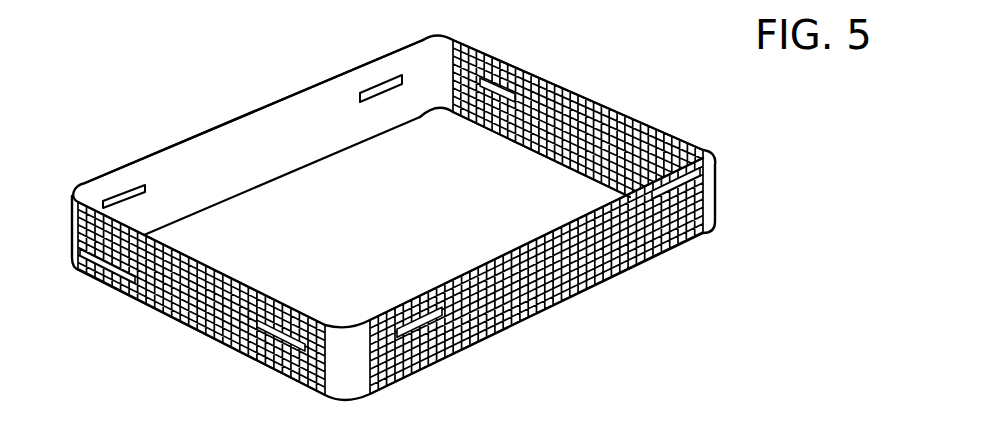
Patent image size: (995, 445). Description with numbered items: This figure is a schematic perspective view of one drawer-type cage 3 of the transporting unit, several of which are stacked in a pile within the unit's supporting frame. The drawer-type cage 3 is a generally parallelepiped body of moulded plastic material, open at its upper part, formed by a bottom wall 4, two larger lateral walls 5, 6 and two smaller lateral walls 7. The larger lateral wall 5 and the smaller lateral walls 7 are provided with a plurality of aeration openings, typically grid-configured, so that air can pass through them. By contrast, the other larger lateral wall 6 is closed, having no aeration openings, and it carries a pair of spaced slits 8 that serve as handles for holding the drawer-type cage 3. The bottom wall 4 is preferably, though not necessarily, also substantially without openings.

The drawer-type cage 3 is at (116, 114).
The bottom wall 4 is at (335, 260).
The larger lateral wall 5 is at (538, 290).
The larger lateral wall 6 is at (260, 133).
The smaller lateral wall 7 is at (568, 102).
The slit 8 is at (132, 188).